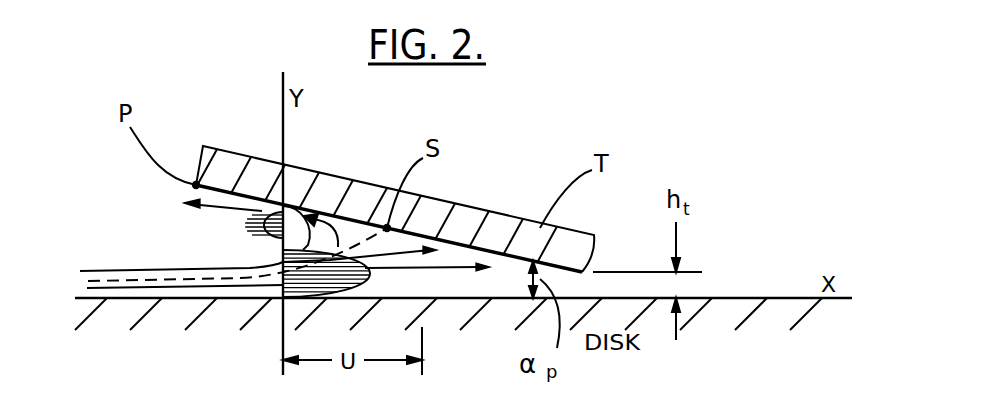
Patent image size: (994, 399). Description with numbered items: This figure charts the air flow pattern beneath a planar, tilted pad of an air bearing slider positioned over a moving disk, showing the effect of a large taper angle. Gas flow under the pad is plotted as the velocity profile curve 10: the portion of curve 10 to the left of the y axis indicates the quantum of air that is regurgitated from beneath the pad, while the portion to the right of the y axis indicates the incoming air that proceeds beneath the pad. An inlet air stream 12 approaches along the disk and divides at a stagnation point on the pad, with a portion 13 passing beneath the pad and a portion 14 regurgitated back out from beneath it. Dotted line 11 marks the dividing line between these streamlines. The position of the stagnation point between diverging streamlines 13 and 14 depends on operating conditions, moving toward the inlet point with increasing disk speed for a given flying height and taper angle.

The velocity profile curve 10 is at (245, 225).
The dotted dividing line 11 is at (153, 242).
The inlet air stream 12 is at (103, 271).
The portion passing beneath pad 13 is at (430, 272).
The regurgitated portion 14 is at (198, 210).